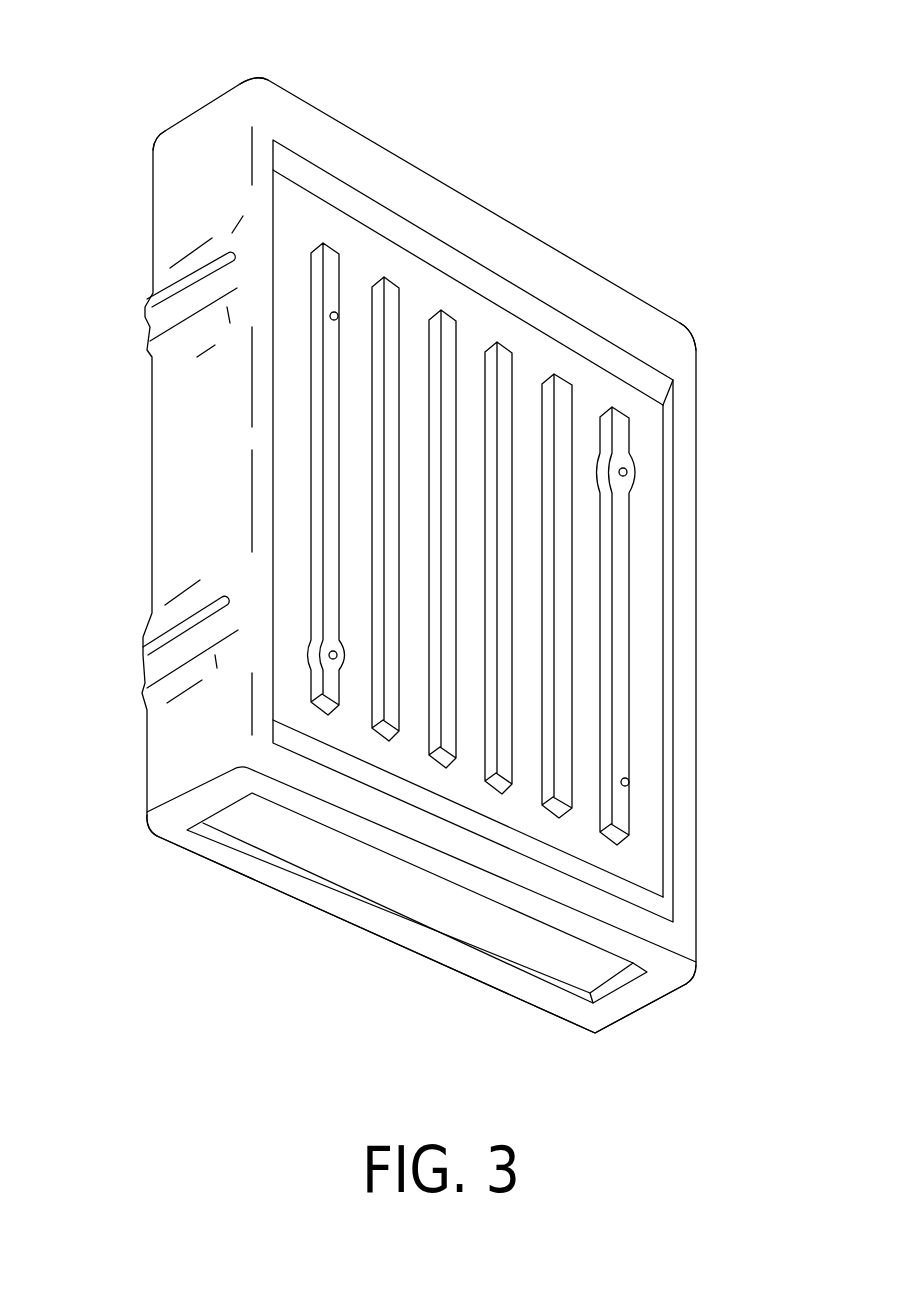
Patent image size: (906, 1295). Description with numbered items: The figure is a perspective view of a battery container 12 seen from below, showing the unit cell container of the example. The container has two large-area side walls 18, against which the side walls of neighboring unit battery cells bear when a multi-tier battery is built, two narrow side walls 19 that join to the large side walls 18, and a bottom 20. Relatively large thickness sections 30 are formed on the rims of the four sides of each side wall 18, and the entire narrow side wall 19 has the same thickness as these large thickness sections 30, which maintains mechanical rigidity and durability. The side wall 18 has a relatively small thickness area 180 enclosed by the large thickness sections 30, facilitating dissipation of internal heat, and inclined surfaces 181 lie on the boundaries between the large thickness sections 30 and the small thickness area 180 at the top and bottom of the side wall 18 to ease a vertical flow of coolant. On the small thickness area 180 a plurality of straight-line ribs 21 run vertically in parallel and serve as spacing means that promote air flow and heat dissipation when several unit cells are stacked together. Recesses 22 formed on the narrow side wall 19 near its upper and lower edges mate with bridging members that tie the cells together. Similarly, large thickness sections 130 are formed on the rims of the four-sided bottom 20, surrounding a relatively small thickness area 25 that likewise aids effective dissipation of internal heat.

The housing 12 is at (680, 292).
The side wall 18 is at (688, 618).
The small thickness area 180 is at (585, 588).
The inclined surface 181 is at (335, 196).
The side wall 19 is at (188, 508).
The bottom 20 is at (610, 1017).
The straight-line rib 21 is at (421, 200).
The recess 22 is at (152, 325).
The small thickness area 25 is at (380, 883).
The large thickness section 30 is at (203, 137).
The large thickness section 130 is at (600, 938).